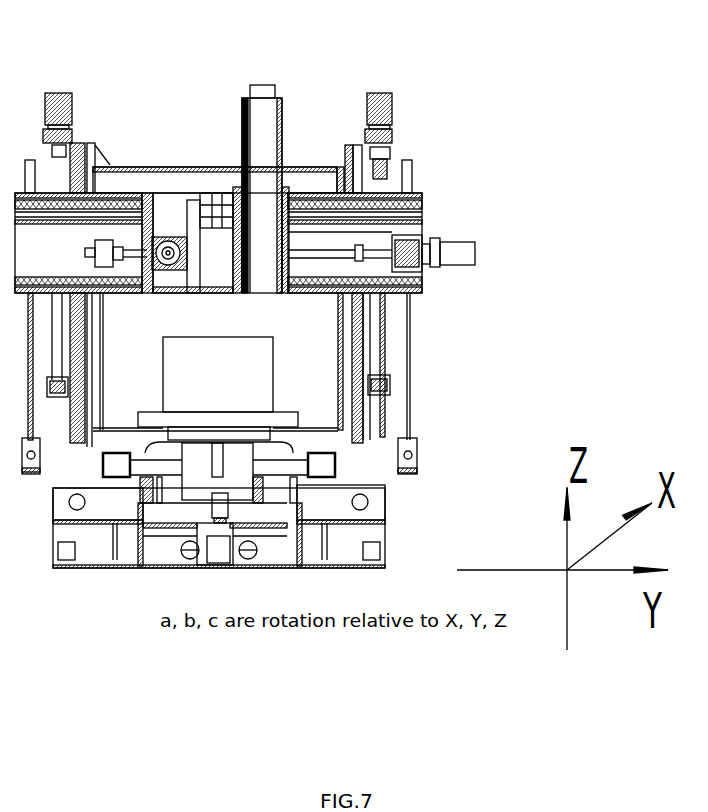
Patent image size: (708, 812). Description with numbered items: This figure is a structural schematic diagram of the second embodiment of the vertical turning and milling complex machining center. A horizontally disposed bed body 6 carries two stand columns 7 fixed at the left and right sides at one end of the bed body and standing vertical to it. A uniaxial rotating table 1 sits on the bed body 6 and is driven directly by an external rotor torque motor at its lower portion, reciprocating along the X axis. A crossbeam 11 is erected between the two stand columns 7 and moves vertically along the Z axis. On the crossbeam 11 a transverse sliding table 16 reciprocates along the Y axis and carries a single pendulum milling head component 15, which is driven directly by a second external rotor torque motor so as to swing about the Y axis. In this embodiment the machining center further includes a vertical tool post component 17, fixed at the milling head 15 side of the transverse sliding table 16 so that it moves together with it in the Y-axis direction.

The uniaxial rotating table 1 is at (310, 422).
The bed body 6 is at (285, 488).
The stand columns 7 is at (426, 370).
The crossbeam 11 is at (404, 185).
The single pendulum milling head component 15 is at (214, 137).
The transverse sliding table 16 is at (161, 149).
The vertical tool post component 17 is at (378, 150).